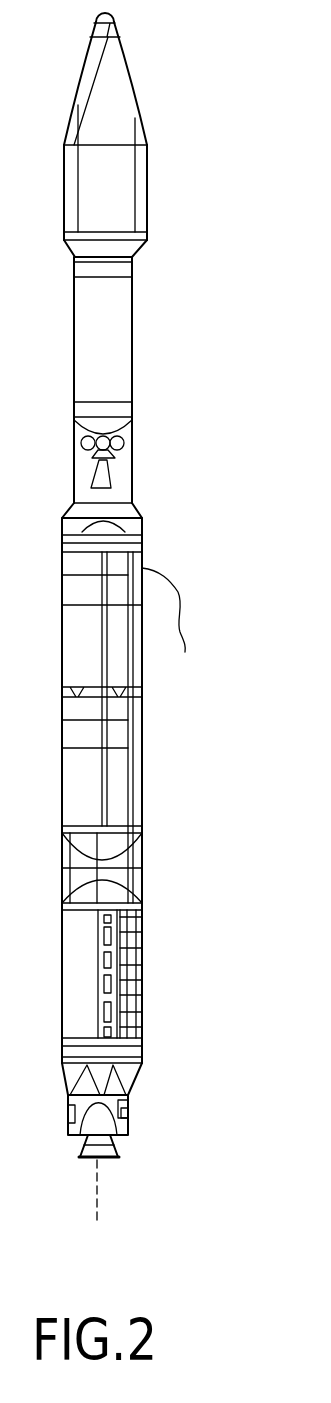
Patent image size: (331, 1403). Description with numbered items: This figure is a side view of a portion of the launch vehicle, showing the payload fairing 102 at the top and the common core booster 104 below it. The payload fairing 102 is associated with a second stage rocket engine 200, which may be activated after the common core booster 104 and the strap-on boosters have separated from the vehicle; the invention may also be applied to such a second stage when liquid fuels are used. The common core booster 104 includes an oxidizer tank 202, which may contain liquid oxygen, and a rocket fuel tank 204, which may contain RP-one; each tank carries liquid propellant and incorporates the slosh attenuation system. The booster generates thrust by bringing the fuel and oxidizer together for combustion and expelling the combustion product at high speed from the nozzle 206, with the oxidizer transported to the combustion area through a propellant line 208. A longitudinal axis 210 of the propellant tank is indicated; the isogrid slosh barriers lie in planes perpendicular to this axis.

The payload fairing 102 is at (128, 77).
The common core booster 104 is at (110, 721).
The second stage rocket engine 200 is at (123, 433).
The oxidizer tank 202 is at (108, 773).
The rocket fuel tank 204 is at (116, 975).
The nozzle 206 is at (117, 1150).
The propellant line 208 is at (100, 811).
The longitudinal axis 210 is at (97, 1196).